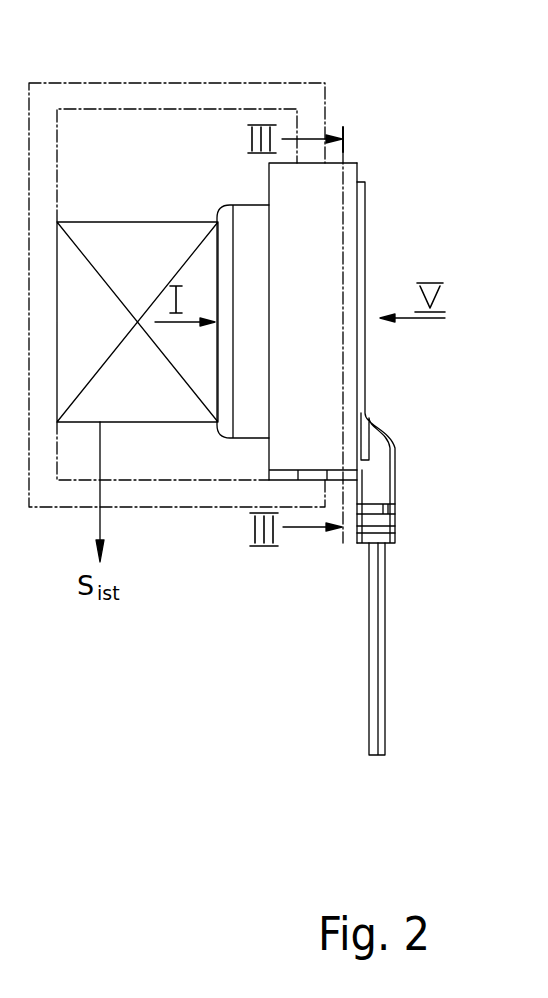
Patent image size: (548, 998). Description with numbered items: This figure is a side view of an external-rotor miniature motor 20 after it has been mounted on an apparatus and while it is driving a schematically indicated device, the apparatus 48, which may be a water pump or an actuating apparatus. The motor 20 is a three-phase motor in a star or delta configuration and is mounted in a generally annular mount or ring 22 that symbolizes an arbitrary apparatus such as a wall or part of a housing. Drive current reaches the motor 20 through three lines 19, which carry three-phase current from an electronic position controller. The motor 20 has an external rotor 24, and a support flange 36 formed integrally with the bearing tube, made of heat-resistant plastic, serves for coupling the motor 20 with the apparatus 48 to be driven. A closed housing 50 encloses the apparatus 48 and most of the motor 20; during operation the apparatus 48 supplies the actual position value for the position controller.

The closed housing 50 is at (135, 95).
The apparatus 48 is at (101, 230).
The external-rotor miniature motor 20 is at (255, 185).
The mount or ring 22 is at (345, 155).
The support flange 36 is at (363, 208).
The external rotor 24 is at (237, 422).
The lines 19 is at (378, 718).